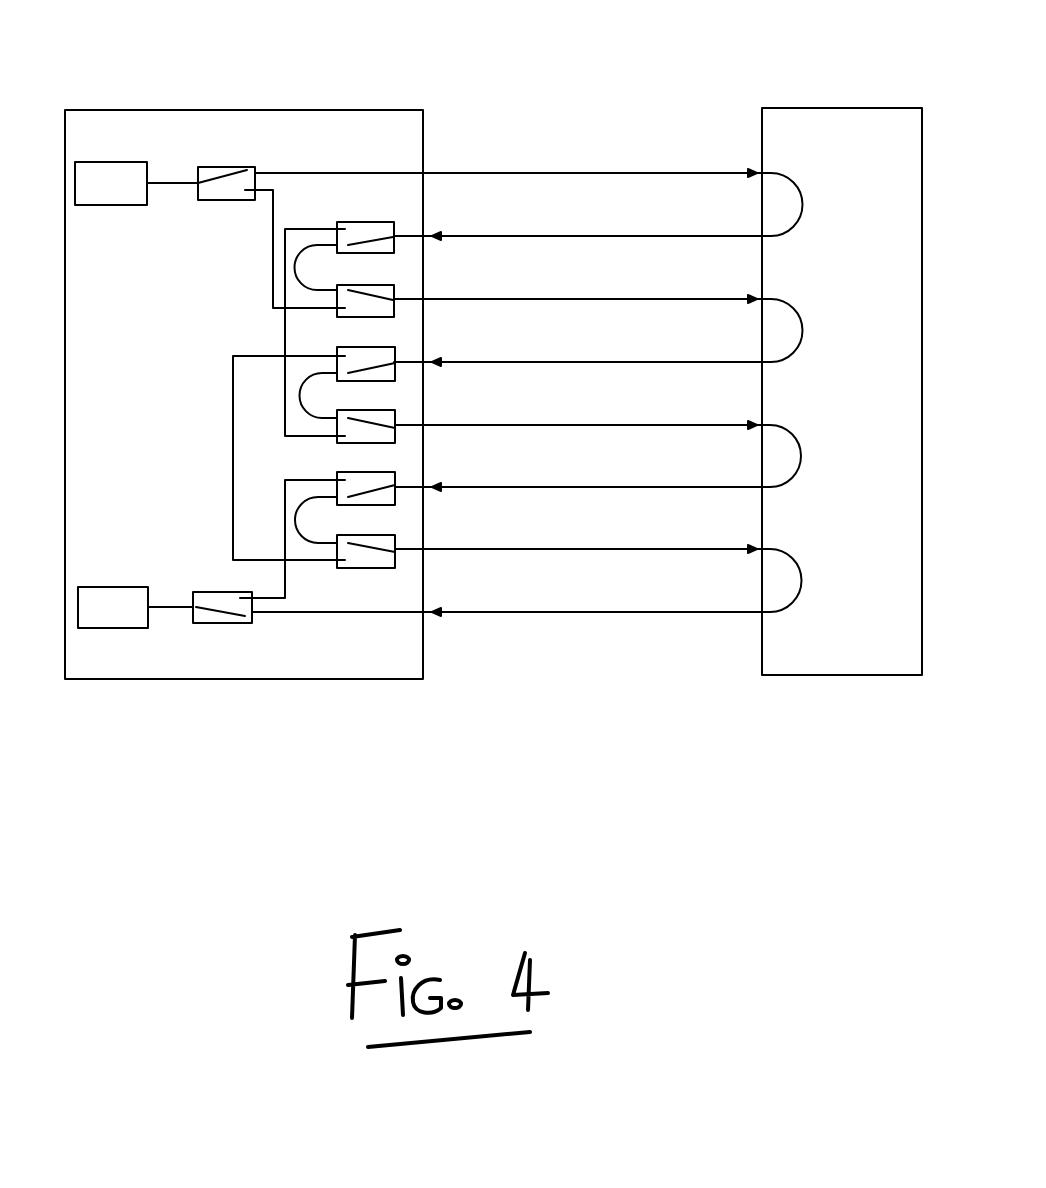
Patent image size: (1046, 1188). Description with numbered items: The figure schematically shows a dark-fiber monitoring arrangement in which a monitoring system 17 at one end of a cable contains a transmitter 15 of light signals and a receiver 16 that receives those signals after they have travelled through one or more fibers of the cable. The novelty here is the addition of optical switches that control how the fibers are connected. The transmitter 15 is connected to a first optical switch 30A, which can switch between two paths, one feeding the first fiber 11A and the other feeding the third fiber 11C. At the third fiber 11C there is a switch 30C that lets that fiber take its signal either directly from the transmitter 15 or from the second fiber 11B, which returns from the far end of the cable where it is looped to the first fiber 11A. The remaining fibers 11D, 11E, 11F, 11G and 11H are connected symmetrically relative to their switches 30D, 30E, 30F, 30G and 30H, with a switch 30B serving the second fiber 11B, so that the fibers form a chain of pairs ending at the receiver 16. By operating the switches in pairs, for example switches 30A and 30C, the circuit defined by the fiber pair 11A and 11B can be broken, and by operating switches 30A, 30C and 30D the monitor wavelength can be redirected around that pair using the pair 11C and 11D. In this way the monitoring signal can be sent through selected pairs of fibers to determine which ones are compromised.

The monitoring system 17 is at (250, 110).
The transmitter 15 is at (108, 205).
The receiver 16 is at (105, 587).
The first optical switch 30A is at (245, 170).
The optical switch 30B is at (367, 222).
The optical switch 30C is at (393, 288).
The optical switch 30D is at (395, 377).
The optical switch 30E is at (395, 432).
The optical switch 30F is at (395, 485).
The optical switch 30G is at (395, 565).
The optical switch 30H is at (228, 623).
The first fiber 11A is at (560, 173).
The second fiber 11B is at (582, 236).
The third fiber 11C is at (600, 299).
The fiber 11D is at (723, 362).
The fiber 11E is at (718, 425).
The fiber 11F is at (718, 487).
The fiber 11G is at (730, 548).
The fiber 11H is at (743, 612).